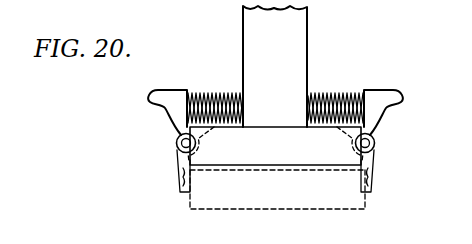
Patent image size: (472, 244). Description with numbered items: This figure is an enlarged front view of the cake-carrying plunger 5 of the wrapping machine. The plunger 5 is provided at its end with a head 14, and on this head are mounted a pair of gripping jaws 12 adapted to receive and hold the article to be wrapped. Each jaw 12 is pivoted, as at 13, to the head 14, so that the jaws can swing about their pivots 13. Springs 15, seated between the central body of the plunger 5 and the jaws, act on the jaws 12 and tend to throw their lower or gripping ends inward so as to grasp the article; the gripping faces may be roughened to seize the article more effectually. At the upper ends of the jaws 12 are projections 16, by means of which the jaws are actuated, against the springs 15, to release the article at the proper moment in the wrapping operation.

The plunger 5 is at (275, 66).
The gripping jaws 12 is at (178, 176).
The pivot 13 is at (177, 145).
The head of the plunger 14 is at (277, 168).
The springs 15 is at (226, 93).
The projections 16 is at (152, 101).